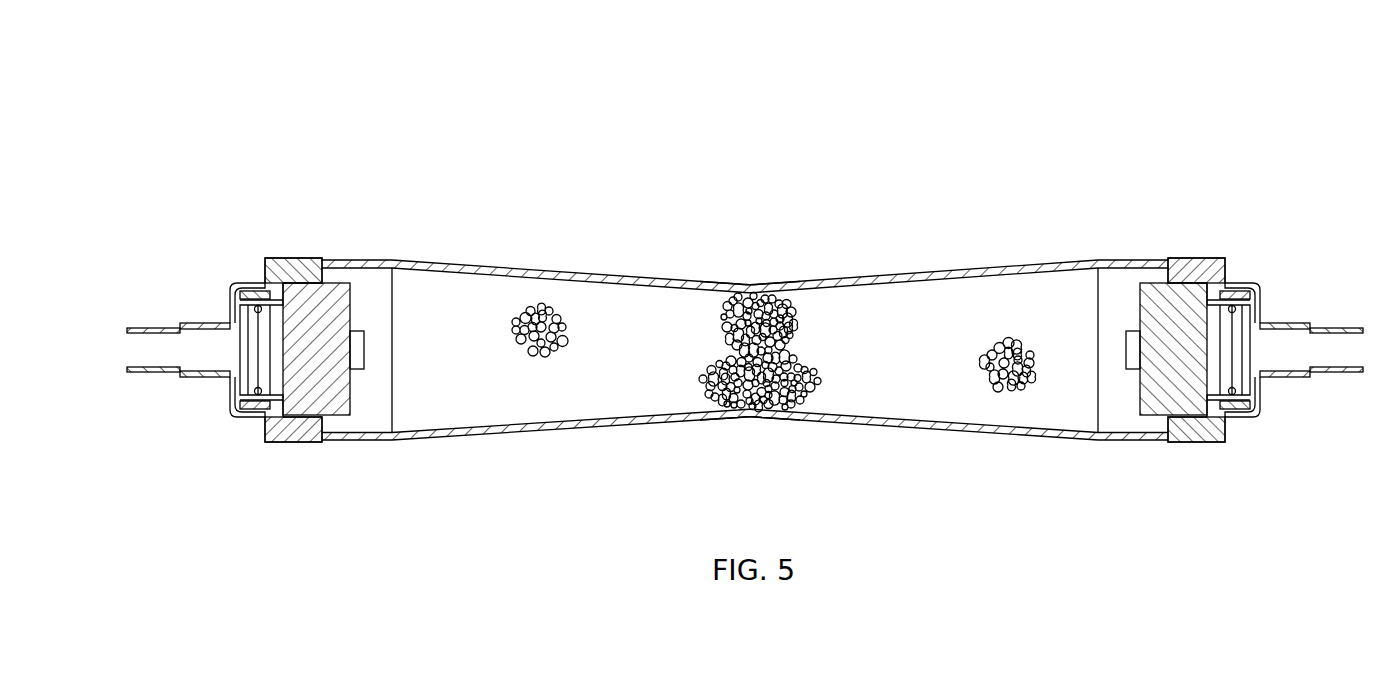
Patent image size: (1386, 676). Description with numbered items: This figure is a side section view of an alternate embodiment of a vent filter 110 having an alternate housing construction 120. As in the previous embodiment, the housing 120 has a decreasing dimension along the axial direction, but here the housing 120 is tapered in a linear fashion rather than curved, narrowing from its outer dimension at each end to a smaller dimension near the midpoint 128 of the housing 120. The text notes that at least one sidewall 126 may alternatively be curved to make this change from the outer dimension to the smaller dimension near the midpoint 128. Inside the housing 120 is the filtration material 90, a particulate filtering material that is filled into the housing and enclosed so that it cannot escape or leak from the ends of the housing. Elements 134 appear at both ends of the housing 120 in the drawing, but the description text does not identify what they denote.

The vent filter 110 is at (745, 246).
The housing 120 is at (906, 216).
The sidewall 126 is at (497, 409).
The midpoint 128 is at (756, 262).
The end plug 134 is at (337, 297).
The filtration material 90 is at (586, 340).